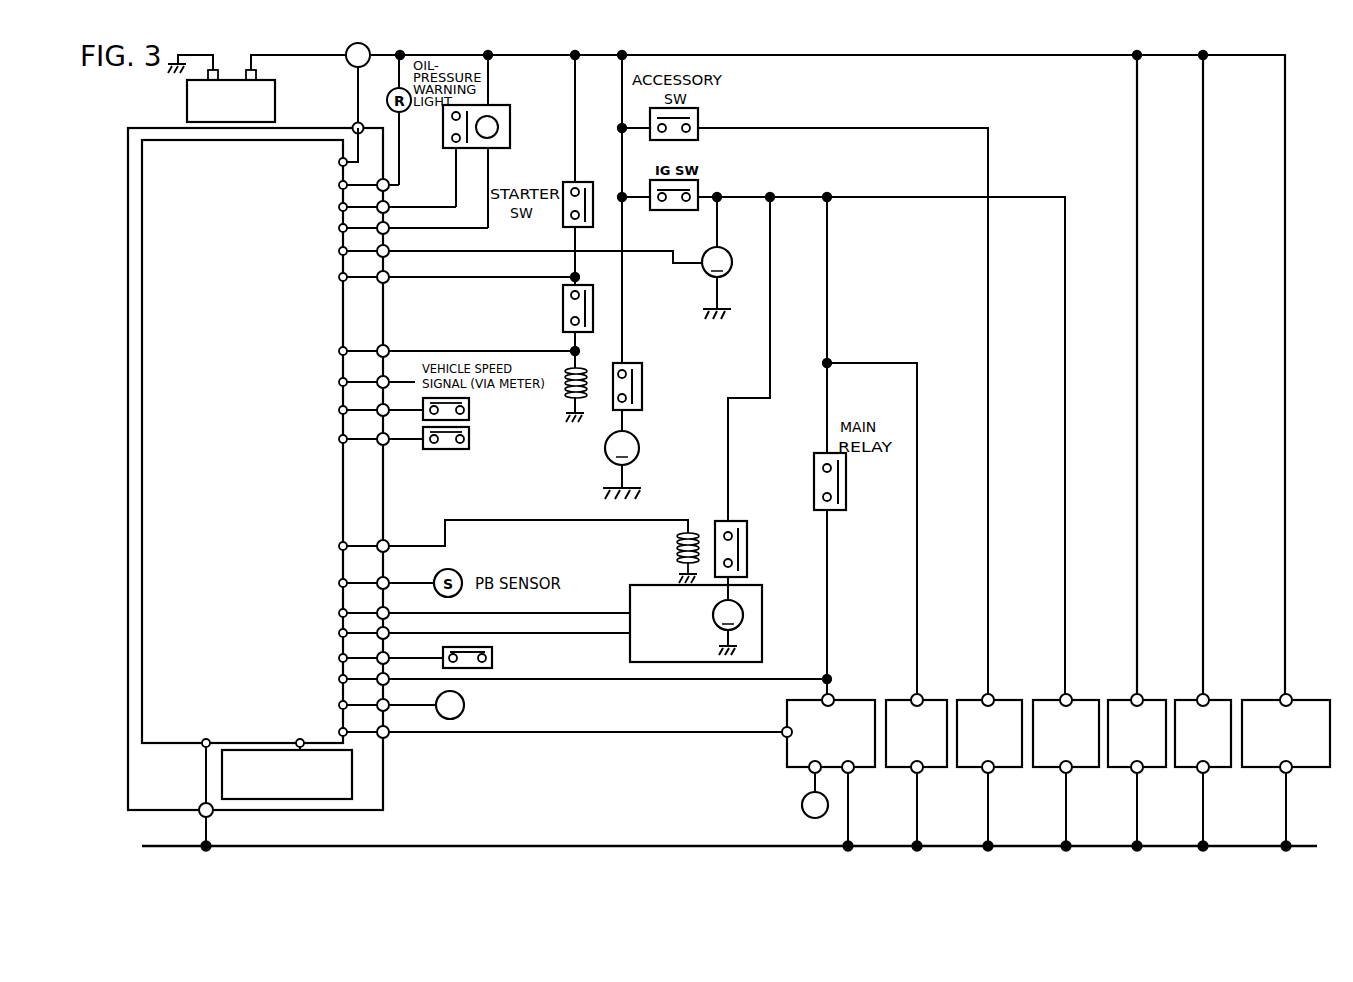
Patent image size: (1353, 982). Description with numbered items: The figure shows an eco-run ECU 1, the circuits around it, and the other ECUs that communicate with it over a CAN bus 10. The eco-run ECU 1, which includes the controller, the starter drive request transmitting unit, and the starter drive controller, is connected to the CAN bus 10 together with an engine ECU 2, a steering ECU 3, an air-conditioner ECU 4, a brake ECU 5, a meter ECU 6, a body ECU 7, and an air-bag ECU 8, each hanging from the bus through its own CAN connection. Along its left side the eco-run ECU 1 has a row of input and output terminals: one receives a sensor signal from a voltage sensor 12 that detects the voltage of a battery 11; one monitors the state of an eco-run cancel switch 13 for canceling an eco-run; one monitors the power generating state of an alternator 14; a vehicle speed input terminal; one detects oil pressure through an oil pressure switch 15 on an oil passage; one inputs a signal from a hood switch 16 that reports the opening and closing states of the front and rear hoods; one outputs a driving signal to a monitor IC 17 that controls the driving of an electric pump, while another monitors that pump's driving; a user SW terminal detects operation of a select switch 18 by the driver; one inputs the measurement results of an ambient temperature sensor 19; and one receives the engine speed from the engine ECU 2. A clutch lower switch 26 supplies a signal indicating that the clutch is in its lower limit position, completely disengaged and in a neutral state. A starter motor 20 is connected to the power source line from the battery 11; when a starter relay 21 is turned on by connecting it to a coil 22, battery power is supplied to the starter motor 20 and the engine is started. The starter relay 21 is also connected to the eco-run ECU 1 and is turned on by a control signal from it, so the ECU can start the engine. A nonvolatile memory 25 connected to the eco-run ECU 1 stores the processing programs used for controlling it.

The eco-run ECU 1 is at (271, 469).
The engine ECU 2 is at (847, 697).
The steering ECU 3 is at (932, 697).
The air-conditioner ECU 4 is at (1004, 697).
The brake ECU 5 is at (1082, 697).
The meter ECU 6 is at (1150, 697).
The body ECU 7 is at (1217, 697).
The air-bag ECU 8 is at (1300, 697).
The CAN bus 10 is at (552, 846).
The battery 11 is at (228, 73).
The voltage sensor 12 is at (369, 51).
The eco-run cancel switch 13 is at (511, 129).
The alternator 14 is at (721, 247).
The oil pressure switch 15 is at (469, 416).
The hood switch 16 is at (446, 450).
The monitor IC 17 is at (762, 598).
The select switch 18 is at (493, 651).
The ambient temperature sensor 19 is at (463, 698).
The starter motor 20 is at (634, 437).
The starter relay 21 is at (643, 371).
The coil 22 is at (577, 366).
The nonvolatile memory 25 is at (353, 768).
The clutch lower switch 26 is at (578, 284).